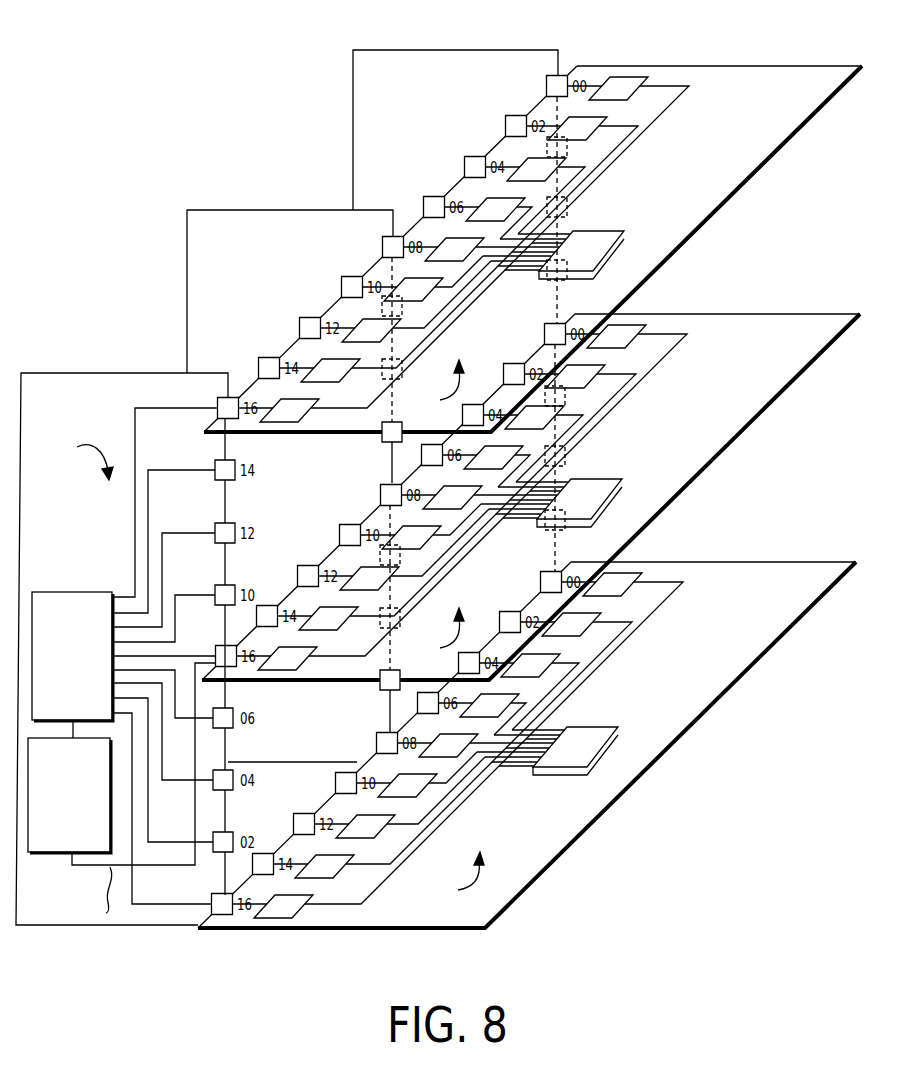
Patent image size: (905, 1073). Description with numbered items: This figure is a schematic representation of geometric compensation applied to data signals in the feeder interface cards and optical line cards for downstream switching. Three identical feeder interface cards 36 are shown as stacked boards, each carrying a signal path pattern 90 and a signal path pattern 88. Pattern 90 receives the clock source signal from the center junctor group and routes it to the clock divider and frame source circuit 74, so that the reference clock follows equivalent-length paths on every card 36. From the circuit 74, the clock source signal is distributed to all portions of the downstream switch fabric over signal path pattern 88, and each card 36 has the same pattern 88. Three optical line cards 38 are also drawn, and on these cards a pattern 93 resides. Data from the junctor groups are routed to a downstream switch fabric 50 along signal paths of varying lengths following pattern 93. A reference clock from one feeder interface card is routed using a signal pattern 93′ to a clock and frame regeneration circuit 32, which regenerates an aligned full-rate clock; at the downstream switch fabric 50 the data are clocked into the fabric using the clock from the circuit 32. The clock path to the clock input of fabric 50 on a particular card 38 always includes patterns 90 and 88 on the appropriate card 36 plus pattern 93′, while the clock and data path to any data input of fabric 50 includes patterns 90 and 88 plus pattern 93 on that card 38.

The feeder interface card (FIC) 36 is at (733, 66).
The optical line card (OLC) 38 is at (445, 50).
The clock divider and frame source circuit 74 is at (598, 231).
The signal path pattern 88 is at (447, 631).
The signal path pattern 90 is at (518, 272).
The downstream switch fabric 50 is at (87, 592).
The clock and frame regeneration circuit 32 is at (38, 853).
The signal path pattern 93 is at (80, 458).
The signal path pattern 93′ is at (95, 895).